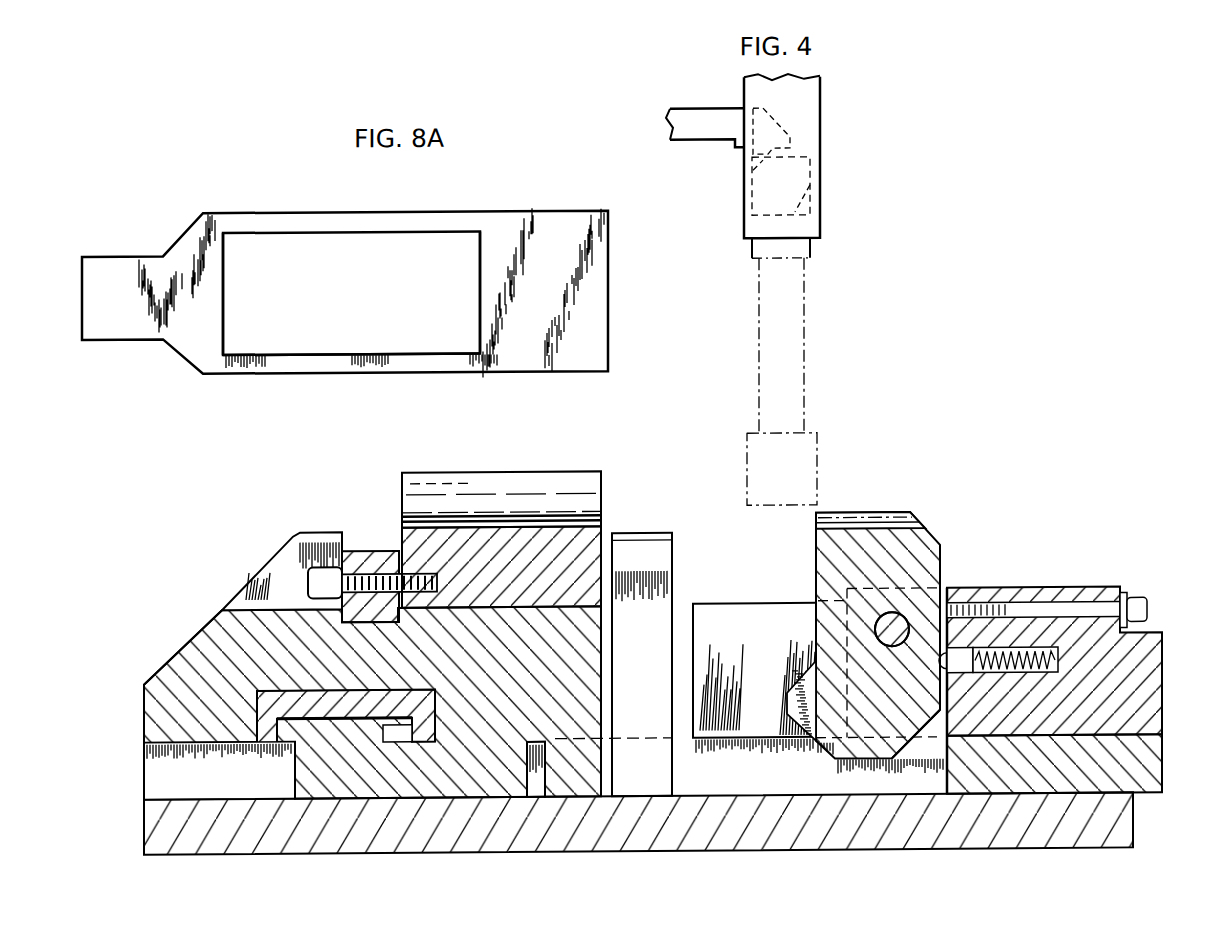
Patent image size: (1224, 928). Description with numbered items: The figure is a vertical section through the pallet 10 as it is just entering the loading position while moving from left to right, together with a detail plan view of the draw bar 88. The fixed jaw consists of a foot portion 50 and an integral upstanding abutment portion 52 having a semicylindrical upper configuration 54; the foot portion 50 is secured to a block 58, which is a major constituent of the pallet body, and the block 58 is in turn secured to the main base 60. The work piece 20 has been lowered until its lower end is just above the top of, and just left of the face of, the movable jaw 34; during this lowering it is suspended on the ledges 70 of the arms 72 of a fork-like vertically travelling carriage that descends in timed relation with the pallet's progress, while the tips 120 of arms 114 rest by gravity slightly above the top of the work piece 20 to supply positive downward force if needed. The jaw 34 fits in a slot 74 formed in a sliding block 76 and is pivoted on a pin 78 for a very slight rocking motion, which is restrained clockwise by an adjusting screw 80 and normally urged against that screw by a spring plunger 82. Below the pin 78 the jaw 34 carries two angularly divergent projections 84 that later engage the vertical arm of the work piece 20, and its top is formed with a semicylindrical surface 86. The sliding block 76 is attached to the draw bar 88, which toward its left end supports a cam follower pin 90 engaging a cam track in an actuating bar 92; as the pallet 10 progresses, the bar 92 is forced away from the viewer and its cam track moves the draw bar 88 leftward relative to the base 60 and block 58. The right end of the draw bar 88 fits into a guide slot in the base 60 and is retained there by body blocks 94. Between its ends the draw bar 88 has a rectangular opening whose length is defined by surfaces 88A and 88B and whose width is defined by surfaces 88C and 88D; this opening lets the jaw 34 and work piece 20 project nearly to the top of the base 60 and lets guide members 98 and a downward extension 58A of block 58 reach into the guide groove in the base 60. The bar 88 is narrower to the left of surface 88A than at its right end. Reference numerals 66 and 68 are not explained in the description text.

In FIG. 4, the pallet 10 is at (193, 616).
In FIG. 4, the work piece 20 is at (815, 313).
In FIG. 4, the movable jaw 34 is at (816, 549).
In FIG. 4, the foot portion 50 is at (603, 523).
In FIG. 4, the upstanding abutment portion 52 is at (437, 471).
In FIG. 4, the semicylindrical upper configuration 54 is at (512, 500).
In FIG. 4, the block 58 is at (558, 670).
In FIG. 4, the downward extension 58A is at (572, 778).
In FIG. 4, the main base 60 is at (897, 852).
In FIG. 4, the nut 66 is at (377, 549).
In FIG. 4, the wedge block 68 is at (280, 575).
In FIG. 4, the ledges 70 is at (822, 191).
In FIG. 4, the arms 72 is at (822, 128).
In FIG. 4, the slot 74 is at (905, 747).
In FIG. 4, the sliding block 76 is at (1140, 693).
In FIG. 4, the pin 78 is at (876, 626).
In FIG. 4, the adjusting screw 80 is at (1055, 610).
In FIG. 4, the spring plunger 82 is at (1010, 650).
In FIG. 4, the angularly divergent projections 84 is at (786, 699).
In FIG. 4, the semicylindrical surface 86 is at (845, 520).
In FIG. 8A, the draw bar 88 is at (322, 203).
In FIG. 4, the draw bar 88 is at (293, 766).
In FIG. 8A, the surface 88A is at (223, 303).
In FIG. 4, the surface 88A is at (545, 797).
In FIG. 8A, the surface 88B is at (480, 288).
In FIG. 4, the surface 88B is at (947, 781).
In FIG. 8A, the surface 88C is at (305, 354).
In FIG. 8A, the surface 88D is at (378, 232).
In FIG. 4, the surface 88D is at (717, 780).
In FIG. 4, the cam follower pin 90 is at (383, 728).
In FIG. 4, the actuating bar 92 is at (260, 672).
In FIG. 4, the body blocks 94 is at (742, 604).
In FIG. 4, the guide members 98 is at (656, 640).
In FIG. 4, the arms 114 is at (705, 108).
In FIG. 4, the tips 120 is at (748, 173).